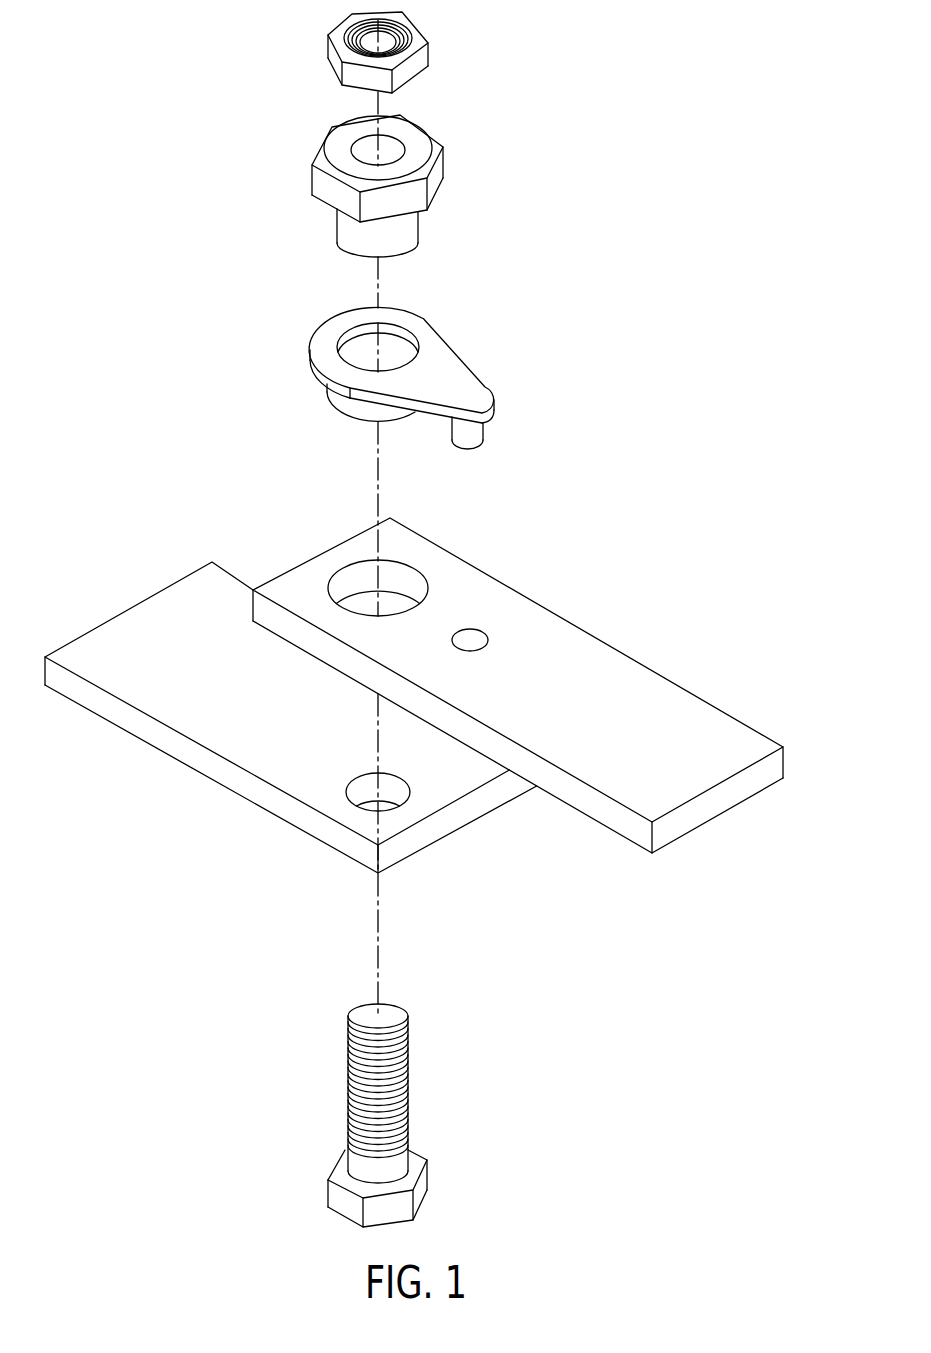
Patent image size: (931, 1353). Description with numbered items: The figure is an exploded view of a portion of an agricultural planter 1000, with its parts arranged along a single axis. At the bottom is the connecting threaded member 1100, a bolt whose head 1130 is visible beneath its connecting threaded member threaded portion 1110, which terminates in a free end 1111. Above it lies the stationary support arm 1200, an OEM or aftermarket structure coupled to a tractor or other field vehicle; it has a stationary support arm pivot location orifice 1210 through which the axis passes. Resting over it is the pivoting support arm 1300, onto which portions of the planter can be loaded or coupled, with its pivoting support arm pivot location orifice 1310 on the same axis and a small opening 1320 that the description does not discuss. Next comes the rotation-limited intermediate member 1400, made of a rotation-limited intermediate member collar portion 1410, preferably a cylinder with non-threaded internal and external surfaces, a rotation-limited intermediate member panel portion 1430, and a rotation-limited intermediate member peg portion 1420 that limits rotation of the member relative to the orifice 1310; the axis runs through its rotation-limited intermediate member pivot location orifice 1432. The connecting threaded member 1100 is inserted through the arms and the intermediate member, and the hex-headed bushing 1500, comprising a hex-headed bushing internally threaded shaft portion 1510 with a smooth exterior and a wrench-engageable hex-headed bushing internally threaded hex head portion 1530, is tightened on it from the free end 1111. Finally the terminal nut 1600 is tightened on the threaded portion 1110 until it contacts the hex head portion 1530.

The agricultural planter portion 1000 is at (435, 614).
The connecting threaded member 1100 is at (376, 1094).
The connecting threaded member threaded portion 1110 is at (410, 1073).
The free end 1111 is at (397, 1020).
The bolt head 1130 is at (423, 1185).
The stationary support arm 1200 is at (291, 704).
The stationary support arm pivot location orifice 1210 is at (360, 790).
The pivoting support arm 1300 is at (539, 672).
The pivoting support arm pivot location orifice 1310 is at (350, 578).
The pin hole 1320 is at (464, 646).
The rotation-limited intermediate member 1400 is at (412, 353).
The rotation-limited intermediate member collar portion 1410 is at (337, 397).
The rotation-limited intermediate member peg portion 1420 is at (485, 432).
The rotation-limited intermediate member panel portion 1430 is at (482, 397).
The rotation-limited intermediate member pivot location orifice 1432 is at (355, 342).
The hex-headed bushing 1500 is at (405, 183).
The hex-headed bushing internally threaded shaft portion 1510 is at (415, 230).
The hex-headed bushing internally threaded hex head portion 1530 is at (318, 187).
The terminal nut 1600 is at (456, 52).